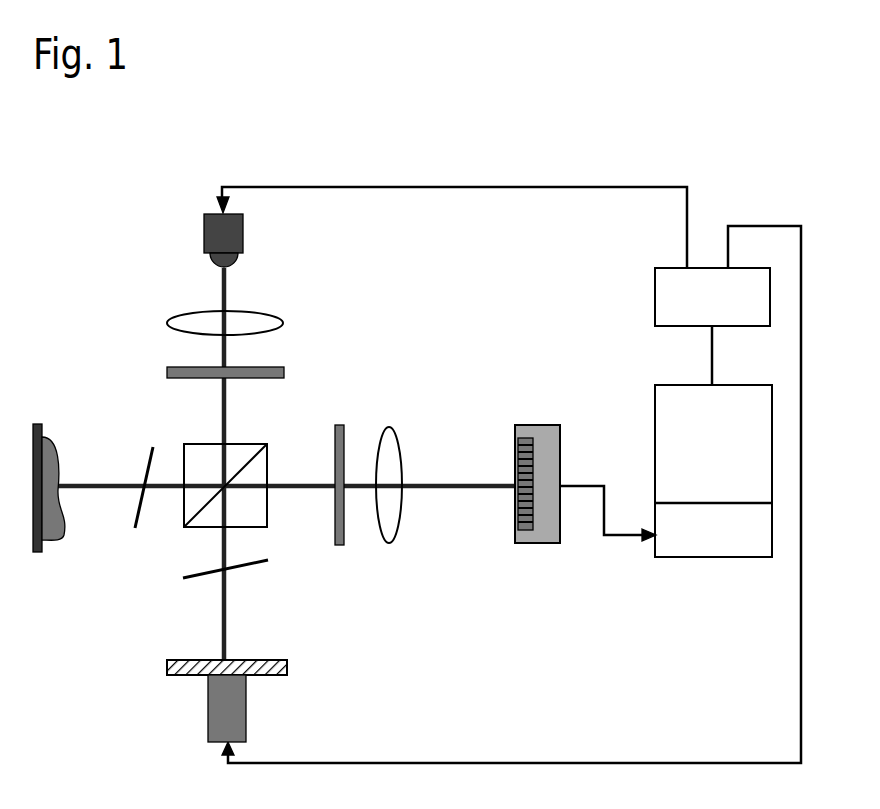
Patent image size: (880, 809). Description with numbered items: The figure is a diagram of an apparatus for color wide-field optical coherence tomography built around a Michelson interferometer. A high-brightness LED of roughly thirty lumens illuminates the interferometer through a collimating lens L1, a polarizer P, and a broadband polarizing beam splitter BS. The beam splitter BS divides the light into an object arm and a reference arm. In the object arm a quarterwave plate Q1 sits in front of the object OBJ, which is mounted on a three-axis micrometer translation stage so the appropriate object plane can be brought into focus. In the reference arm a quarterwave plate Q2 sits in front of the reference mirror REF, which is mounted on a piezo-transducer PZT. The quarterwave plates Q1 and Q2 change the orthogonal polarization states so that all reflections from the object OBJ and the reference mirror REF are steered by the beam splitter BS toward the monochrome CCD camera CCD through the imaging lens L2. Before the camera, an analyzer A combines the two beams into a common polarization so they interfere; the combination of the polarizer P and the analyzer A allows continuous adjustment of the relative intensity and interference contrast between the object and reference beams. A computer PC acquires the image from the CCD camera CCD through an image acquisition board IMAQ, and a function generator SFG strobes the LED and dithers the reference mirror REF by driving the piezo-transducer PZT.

The high-brightness LED is at (246, 248).
The collimating lens L1 is at (210, 324).
The polarizer P is at (225, 384).
The quarterwave plate Q1 is at (142, 477).
The broadband polarizing beam splitter BS is at (211, 498).
The quarterwave plate Q2 is at (234, 582).
The object OBJ is at (58, 502).
The analyzer A is at (330, 483).
The imaging lens L2 is at (391, 503).
The monochrome CCD camera CCD is at (538, 501).
The function generator SFG is at (712, 297).
The computer PC is at (713, 471).
The image acquisition board IMAQ is at (713, 530).
The reference mirror REF is at (212, 654).
The piezo-transducer PZT is at (251, 708).